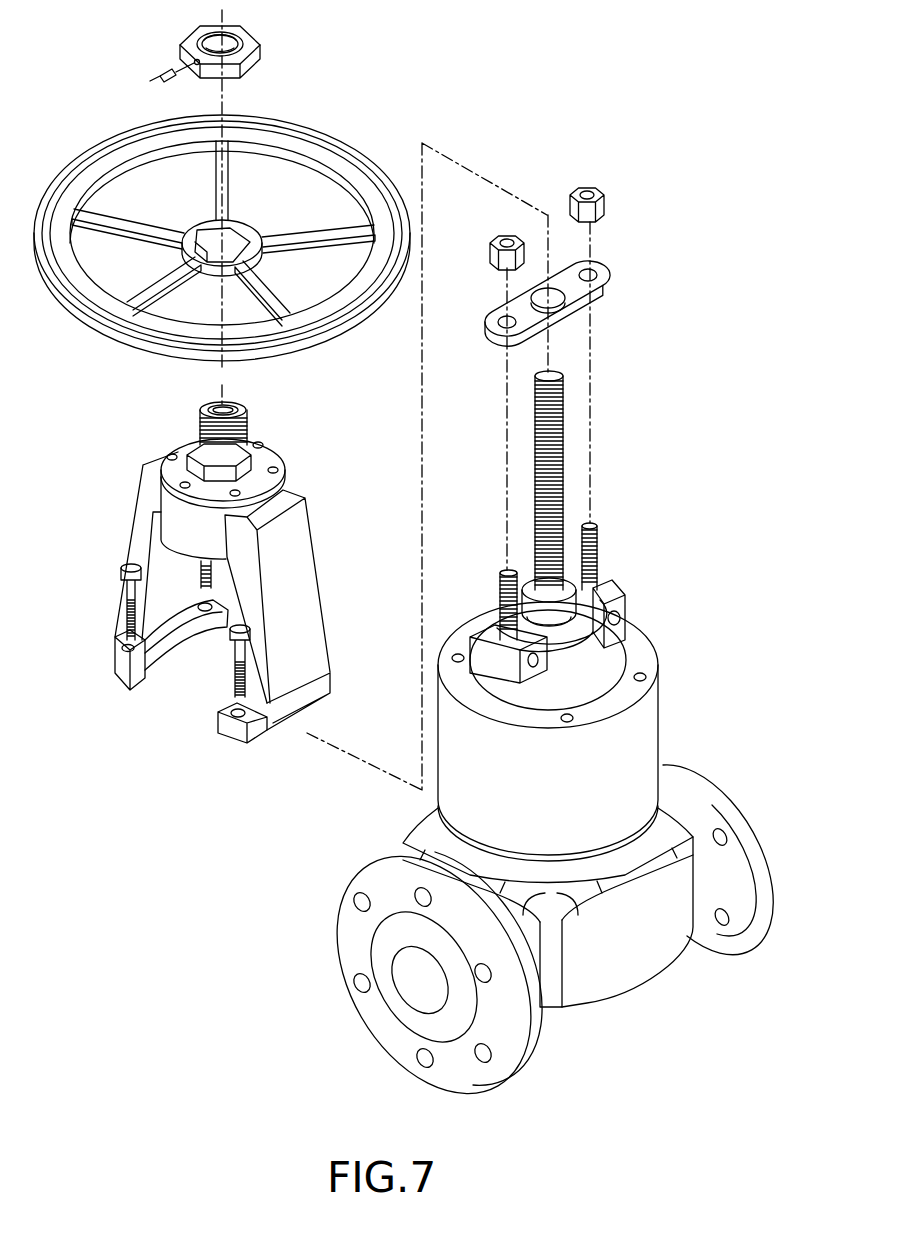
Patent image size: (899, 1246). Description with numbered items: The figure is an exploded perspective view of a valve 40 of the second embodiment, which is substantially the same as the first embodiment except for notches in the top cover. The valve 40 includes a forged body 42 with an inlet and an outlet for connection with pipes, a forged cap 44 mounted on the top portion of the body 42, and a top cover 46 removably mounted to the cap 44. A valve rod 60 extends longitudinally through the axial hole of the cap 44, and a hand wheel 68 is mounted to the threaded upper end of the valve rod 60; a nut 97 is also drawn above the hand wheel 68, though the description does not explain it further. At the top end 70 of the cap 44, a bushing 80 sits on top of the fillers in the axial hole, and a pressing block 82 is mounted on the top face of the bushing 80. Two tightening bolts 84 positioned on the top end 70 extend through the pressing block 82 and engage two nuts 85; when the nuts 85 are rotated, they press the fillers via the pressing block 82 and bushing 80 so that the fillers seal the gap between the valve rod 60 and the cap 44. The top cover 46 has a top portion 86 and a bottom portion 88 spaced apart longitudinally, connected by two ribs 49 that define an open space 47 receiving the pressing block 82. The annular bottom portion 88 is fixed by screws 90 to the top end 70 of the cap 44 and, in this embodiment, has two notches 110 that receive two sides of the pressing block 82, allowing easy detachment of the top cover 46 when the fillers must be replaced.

The valve 40 is at (730, 443).
The body 42 is at (638, 958).
The cap 44 is at (642, 758).
The top cover 46 is at (300, 555).
The open space 47 is at (178, 590).
The ribs 49 is at (140, 527).
The valve rod 60 is at (548, 498).
The hand wheel 68 is at (330, 145).
The top end 70 is at (630, 693).
The bushing 80 is at (572, 592).
The pressing block 82 is at (590, 305).
The tightening bolts 84 is at (598, 545).
The nuts 85 is at (606, 206).
The top portion 86 is at (283, 502).
The bottom portion 88 is at (230, 732).
The screws 90 is at (132, 604).
The handwheel nut 97 is at (240, 52).
The notches 110 is at (182, 700).